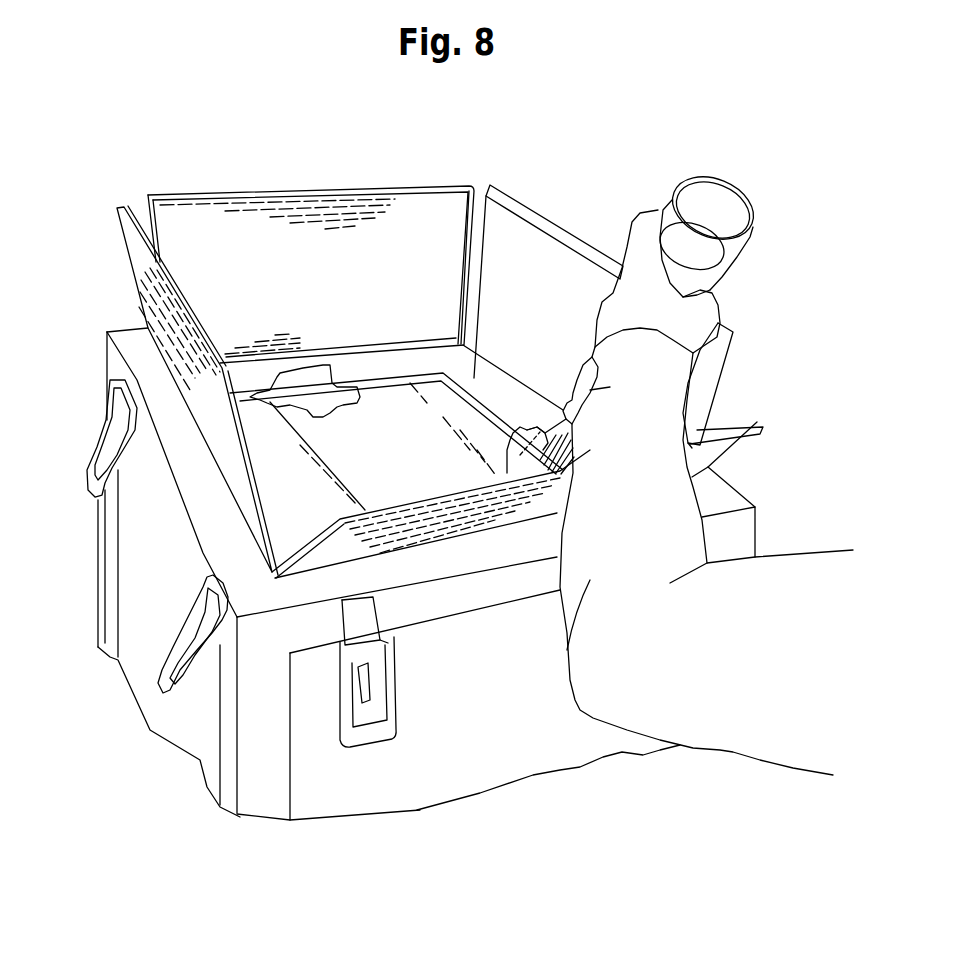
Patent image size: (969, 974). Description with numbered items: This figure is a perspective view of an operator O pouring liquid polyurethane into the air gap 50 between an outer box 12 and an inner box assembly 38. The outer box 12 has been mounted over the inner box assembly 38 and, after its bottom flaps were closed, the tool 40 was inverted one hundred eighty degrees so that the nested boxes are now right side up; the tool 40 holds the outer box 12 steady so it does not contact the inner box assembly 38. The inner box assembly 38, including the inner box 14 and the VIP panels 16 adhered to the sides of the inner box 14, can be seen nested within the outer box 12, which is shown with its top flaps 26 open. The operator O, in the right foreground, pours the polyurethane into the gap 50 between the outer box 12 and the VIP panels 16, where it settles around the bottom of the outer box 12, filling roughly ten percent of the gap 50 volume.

The outer box 12 is at (448, 186).
The inner box 14 is at (360, 407).
The VIP panels 16 is at (385, 380).
The top flaps 26 is at (498, 217).
The inner box assembly 38 is at (490, 458).
The tool 40 is at (507, 757).
The gap 50 is at (477, 380).
The operator O is at (795, 580).